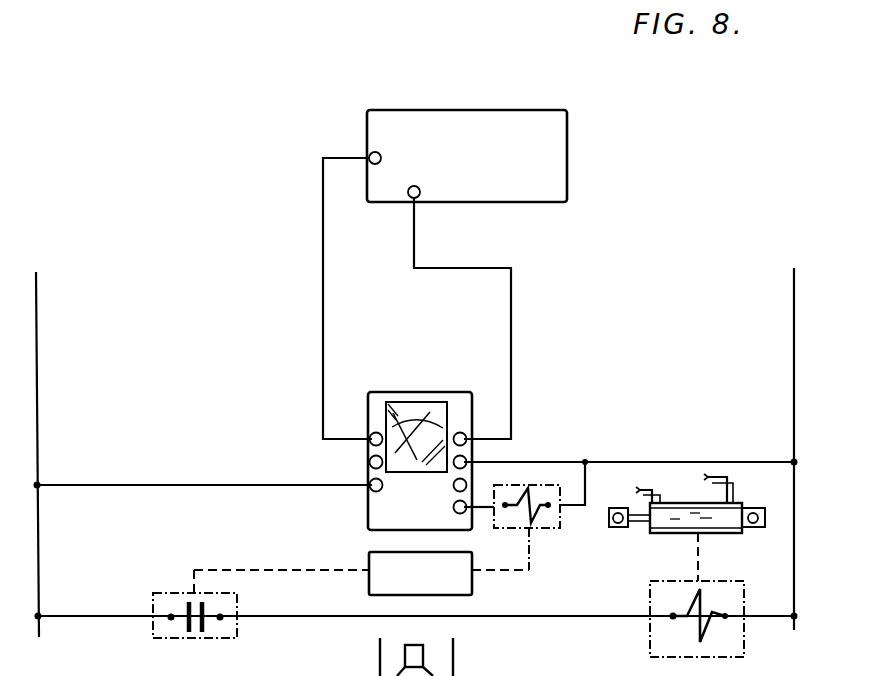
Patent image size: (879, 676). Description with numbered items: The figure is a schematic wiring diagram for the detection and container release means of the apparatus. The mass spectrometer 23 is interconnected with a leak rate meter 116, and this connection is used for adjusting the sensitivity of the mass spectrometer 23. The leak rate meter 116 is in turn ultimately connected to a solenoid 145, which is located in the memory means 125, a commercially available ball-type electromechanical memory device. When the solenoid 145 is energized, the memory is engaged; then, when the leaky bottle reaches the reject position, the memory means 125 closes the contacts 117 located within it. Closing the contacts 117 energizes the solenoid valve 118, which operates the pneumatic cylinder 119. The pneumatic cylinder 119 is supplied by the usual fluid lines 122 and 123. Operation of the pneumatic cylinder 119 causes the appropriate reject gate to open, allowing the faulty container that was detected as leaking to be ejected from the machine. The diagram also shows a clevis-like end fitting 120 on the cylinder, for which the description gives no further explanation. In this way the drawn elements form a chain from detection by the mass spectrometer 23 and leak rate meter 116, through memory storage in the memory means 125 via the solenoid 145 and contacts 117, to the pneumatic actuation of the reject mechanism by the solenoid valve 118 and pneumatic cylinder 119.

The mass spectrometer 23 is at (567, 200).
The leak rate meter 116 is at (470, 400).
The contacts 117 is at (165, 640).
The solenoid valve 118 is at (718, 633).
The pneumatic cylinder 119 is at (717, 530).
The clevis 120 is at (612, 532).
The fluid line 122 is at (655, 487).
The fluid line 123 is at (733, 483).
The memory means 125 is at (368, 557).
The solenoid 145 is at (534, 512).